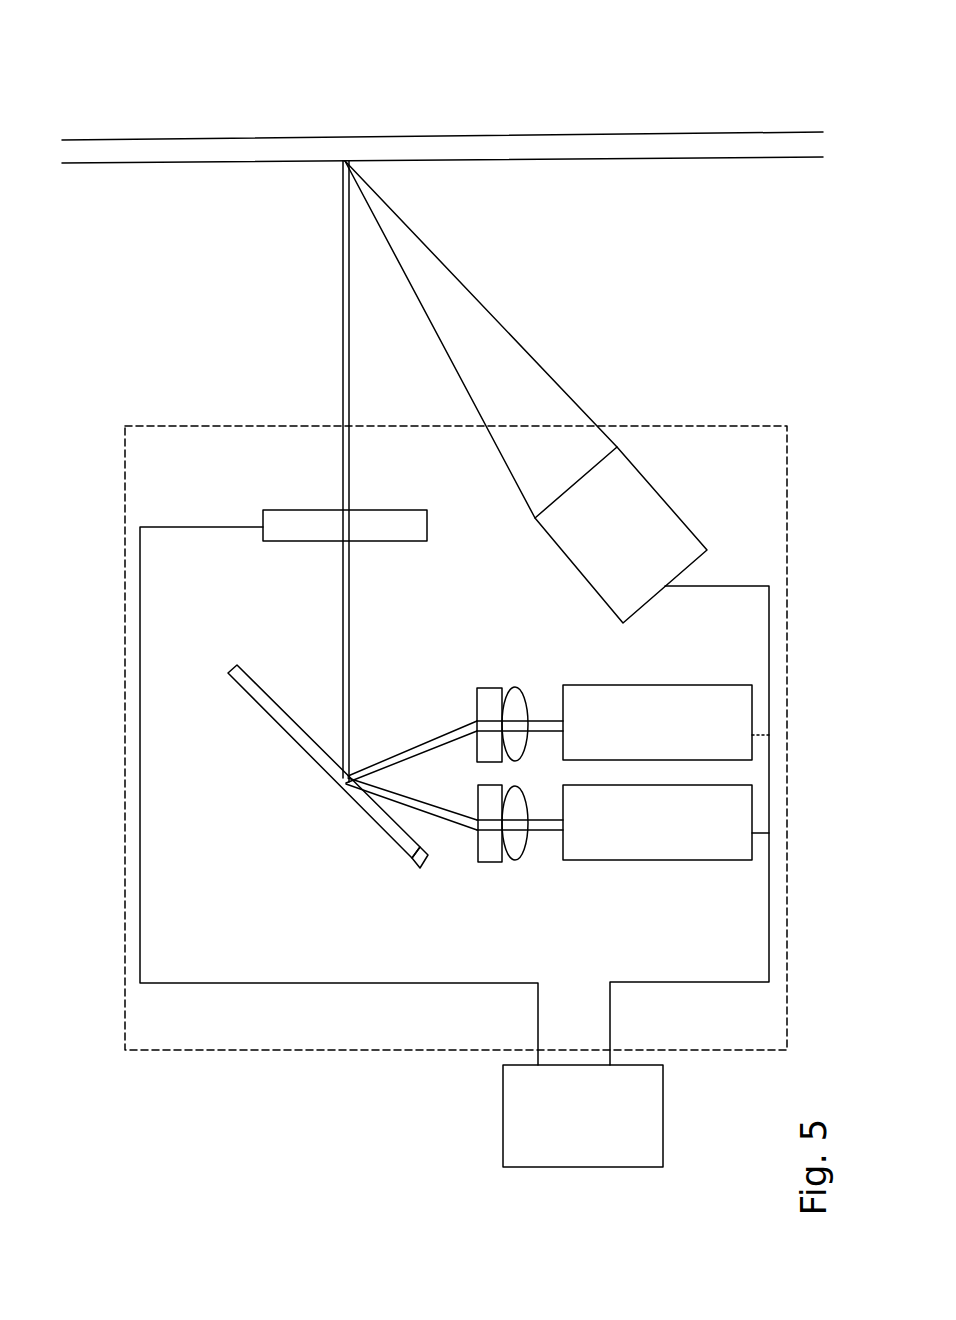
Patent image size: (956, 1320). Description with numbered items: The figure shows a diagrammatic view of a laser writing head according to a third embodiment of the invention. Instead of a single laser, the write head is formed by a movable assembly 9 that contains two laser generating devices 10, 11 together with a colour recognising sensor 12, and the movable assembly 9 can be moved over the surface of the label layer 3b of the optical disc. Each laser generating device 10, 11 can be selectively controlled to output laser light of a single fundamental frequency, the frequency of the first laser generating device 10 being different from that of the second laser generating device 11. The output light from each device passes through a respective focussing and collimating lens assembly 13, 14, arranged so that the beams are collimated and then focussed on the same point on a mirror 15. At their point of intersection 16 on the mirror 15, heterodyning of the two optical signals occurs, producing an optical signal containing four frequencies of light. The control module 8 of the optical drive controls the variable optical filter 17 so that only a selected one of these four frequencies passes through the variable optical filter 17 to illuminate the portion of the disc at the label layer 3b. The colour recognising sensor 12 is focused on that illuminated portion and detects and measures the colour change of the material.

The label layer 3b is at (502, 148).
The control module 8 is at (515, 1148).
The movable assembly 9 is at (113, 1065).
The first laser generating device 10 is at (730, 843).
The second laser generating device 11 is at (732, 712).
The colour recognising sensor 12 is at (666, 537).
The focussing and collimating lens assembly 13 is at (471, 781).
The focussing and collimating lens assembly 14 is at (481, 880).
The mirror 15 is at (375, 817).
The point of intersection 16 is at (348, 777).
The variable optical filter 17 is at (280, 527).